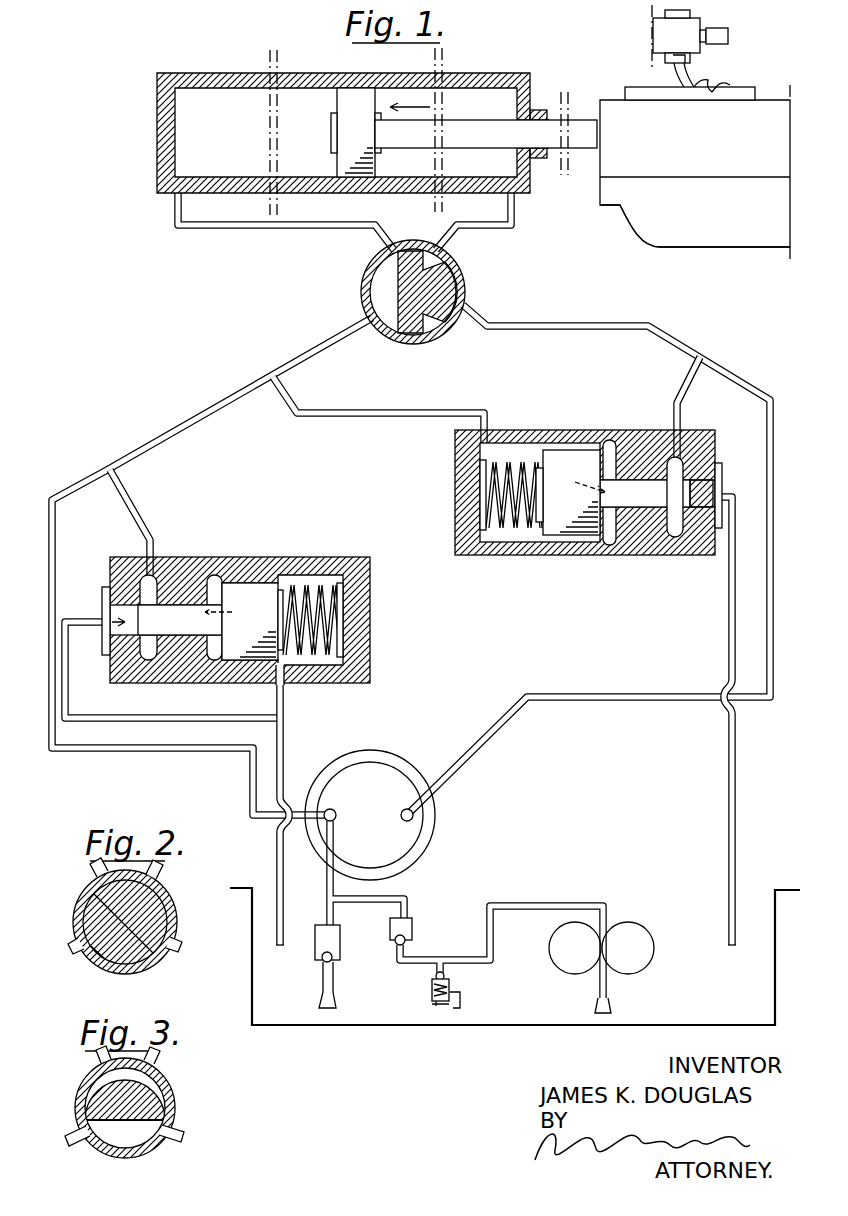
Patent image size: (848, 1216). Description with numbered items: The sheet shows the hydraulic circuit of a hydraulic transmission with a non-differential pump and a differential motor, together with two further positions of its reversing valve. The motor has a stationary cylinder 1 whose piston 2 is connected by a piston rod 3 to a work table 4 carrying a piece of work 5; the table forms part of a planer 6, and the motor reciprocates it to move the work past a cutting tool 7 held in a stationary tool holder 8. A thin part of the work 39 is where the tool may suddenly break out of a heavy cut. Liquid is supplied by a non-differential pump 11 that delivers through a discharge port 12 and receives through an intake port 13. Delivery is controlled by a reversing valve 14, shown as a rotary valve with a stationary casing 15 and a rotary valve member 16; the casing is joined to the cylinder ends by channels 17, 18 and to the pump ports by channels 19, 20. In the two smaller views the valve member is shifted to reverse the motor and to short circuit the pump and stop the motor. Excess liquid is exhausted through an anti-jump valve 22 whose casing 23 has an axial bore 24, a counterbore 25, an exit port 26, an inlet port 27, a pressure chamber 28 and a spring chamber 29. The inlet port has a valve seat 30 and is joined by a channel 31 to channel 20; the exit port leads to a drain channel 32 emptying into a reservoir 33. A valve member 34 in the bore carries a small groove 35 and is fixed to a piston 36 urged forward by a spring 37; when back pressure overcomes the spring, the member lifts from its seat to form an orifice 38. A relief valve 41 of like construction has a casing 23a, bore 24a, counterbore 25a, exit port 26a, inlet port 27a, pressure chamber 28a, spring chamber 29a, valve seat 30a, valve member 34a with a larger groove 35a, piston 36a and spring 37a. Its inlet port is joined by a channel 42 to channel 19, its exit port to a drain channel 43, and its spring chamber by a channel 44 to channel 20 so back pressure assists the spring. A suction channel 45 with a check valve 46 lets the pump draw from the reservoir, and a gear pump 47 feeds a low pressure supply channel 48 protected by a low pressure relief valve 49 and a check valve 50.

In FIG. 1, the cylinder 1 is at (192, 72).
In FIG. 1, the piston 2 is at (356, 132).
In FIG. 1, the piston rod 3 is at (486, 125).
In FIG. 1, the work table 4 is at (695, 173).
In FIG. 1, the piece of work 5 is at (633, 105).
In FIG. 1, the planer 6 is at (695, 224).
In FIG. 1, the cutting tool 7 is at (690, 70).
In FIG. 1, the tool holder 8 is at (653, 47).
In FIG. 1, the thin part of the work 39 is at (712, 95).
In FIG. 1, the non-differential pump 11 is at (370, 802).
In FIG. 1, the discharge port 12 is at (407, 821).
In FIG. 1, the intake port 13 is at (333, 821).
In FIG. 1, the reversing valve 14 is at (401, 306).
In FIG. 2, the reversing valve 14 is at (117, 925).
In FIG. 3, the reversing valve 14 is at (138, 1110).
In FIG. 1, the stationary casing 15 is at (466, 276).
In FIG. 2, the stationary casing 15 is at (122, 972).
In FIG. 3, the stationary casing 15 is at (108, 1150).
In FIG. 1, the rotary valve member 16 is at (405, 335).
In FIG. 2, the rotary valve member 16 is at (150, 958).
In FIG. 3, the rotary valve member 16 is at (88, 1100).
In FIG. 1, the channel 17 is at (490, 226).
In FIG. 2, the channel 17 is at (156, 872).
In FIG. 3, the channel 17 is at (156, 1060).
In FIG. 1, the channel 18 is at (336, 226).
In FIG. 2, the channel 18 is at (92, 877).
In FIG. 3, the channel 18 is at (96, 1060).
In FIG. 1, the channel 19 is at (582, 326).
In FIG. 2, the channel 19 is at (182, 943).
In FIG. 3, the channel 19 is at (186, 1134).
In FIG. 1, the channel 20 is at (192, 389).
In FIG. 2, the channel 20 is at (70, 948).
In FIG. 3, the channel 20 is at (66, 1136).
In FIG. 1, the anti-jump valve 22 is at (251, 620).
In FIG. 1, the casing 23 is at (332, 560).
In FIG. 1, the axial bore 24 is at (188, 665).
In FIG. 1, the counterbore 25 is at (252, 584).
In FIG. 1, the exit port 26 is at (110, 625).
In FIG. 1, the inlet port 27 is at (150, 578).
In FIG. 1, the pressure chamber 28 is at (212, 578).
In FIG. 1, the spring chamber 29 is at (338, 668).
In FIG. 1, the valve seat 30 is at (112, 618).
In FIG. 1, the channel 31 is at (130, 485).
In FIG. 1, the drain channel 32 is at (284, 725).
In FIG. 1, the reservoir 33 is at (390, 1022).
In FIG. 1, the valve member 34 is at (180, 620).
In FIG. 1, the small groove 35 is at (235, 609).
In FIG. 1, the piston 36 is at (262, 665).
In FIG. 1, the spring 37 is at (322, 668).
In FIG. 1, the orifice 38 is at (142, 660).
In FIG. 1, the relief valve 41 is at (576, 494).
In FIG. 1, the casing 23a is at (458, 448).
In FIG. 1, the axial bore 24a is at (655, 508).
In FIG. 1, the counterbore 25a is at (572, 450).
In FIG. 1, the exit port 26a is at (700, 492).
In FIG. 1, the inlet port 27a is at (672, 460).
In FIG. 1, the pressure chamber 28a is at (605, 444).
In FIG. 1, the spring chamber 29a is at (490, 535).
In FIG. 1, the valve seat 30a is at (678, 524).
In FIG. 1, the valve member 34a is at (657, 493).
In FIG. 1, the groove 35a is at (575, 476).
In FIG. 1, the piston 36a is at (580, 535).
In FIG. 1, the spring 37a is at (512, 530).
In FIG. 1, the channel 42 is at (690, 372).
In FIG. 1, the drain channel 43 is at (728, 628).
In FIG. 1, the channel 44 is at (370, 414).
In FIG. 1, the suction channel 45 is at (326, 899).
In FIG. 1, the check valve 46 is at (314, 952).
In FIG. 1, the gear pump 47 is at (640, 956).
In FIG. 1, the low pressure supply channel 48 is at (555, 903).
In FIG. 1, the low pressure relief valve 49 is at (452, 982).
In FIG. 1, the check valve 50 is at (412, 926).